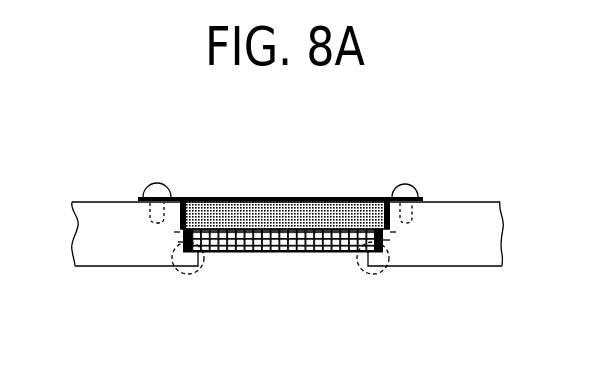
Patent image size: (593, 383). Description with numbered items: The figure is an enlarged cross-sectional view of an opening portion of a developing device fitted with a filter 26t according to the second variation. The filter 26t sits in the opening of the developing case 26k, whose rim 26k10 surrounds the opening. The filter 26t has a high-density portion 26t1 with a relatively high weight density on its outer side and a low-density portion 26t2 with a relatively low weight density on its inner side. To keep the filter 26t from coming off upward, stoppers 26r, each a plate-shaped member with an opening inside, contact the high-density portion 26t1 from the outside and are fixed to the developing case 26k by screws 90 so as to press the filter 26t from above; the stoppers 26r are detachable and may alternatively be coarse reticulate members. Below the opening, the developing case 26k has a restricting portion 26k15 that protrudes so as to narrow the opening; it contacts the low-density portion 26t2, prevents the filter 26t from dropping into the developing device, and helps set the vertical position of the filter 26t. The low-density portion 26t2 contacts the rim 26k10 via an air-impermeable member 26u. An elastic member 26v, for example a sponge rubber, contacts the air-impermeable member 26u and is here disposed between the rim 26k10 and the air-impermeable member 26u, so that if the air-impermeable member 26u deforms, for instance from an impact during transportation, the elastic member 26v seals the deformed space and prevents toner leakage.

The developing case 26k is at (82, 192).
The stopper 26r is at (183, 197).
The filter 26t is at (285, 217).
The high-density portion 26t1 is at (298, 213).
The low-density portion 26t2 is at (280, 252).
The screw 90 is at (410, 188).
The elastic member 26v is at (180, 232).
The air-impermeable member 26u is at (292, 297).
The rim 26k10 is at (473, 315).
The restricting portion 26k15 is at (188, 275).